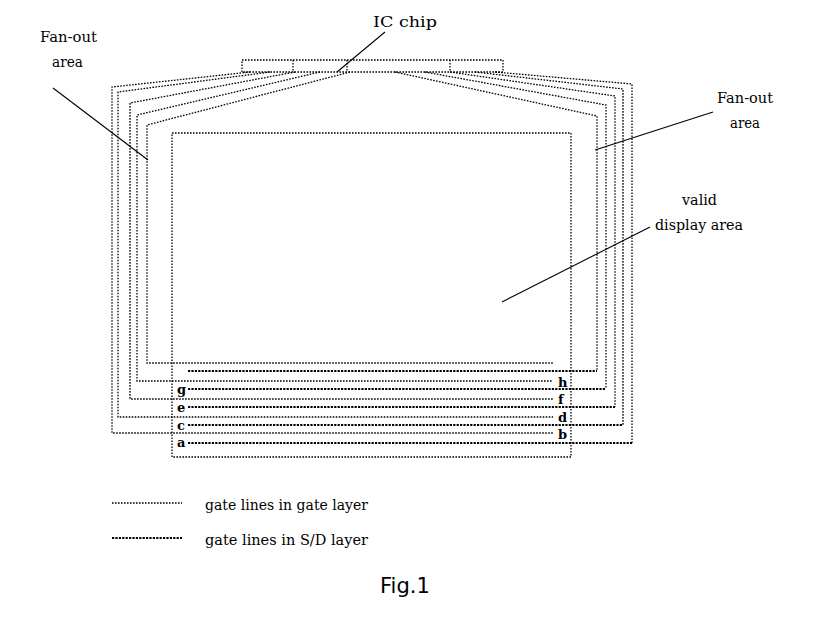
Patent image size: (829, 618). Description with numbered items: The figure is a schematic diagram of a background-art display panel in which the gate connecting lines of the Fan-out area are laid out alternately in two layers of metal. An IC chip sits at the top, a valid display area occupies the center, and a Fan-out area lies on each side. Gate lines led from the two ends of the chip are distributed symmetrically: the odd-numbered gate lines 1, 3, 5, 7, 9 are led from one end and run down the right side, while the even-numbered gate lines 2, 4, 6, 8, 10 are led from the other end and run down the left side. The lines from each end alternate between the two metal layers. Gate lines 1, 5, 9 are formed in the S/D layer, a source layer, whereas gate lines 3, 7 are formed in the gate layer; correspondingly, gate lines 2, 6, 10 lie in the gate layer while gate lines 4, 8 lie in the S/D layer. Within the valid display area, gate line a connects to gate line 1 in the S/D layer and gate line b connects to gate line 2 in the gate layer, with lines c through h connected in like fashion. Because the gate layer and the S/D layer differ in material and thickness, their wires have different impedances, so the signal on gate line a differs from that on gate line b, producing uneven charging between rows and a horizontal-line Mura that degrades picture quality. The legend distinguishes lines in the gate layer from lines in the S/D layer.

The gate line 1 is at (415, 257).
The gate line 2 is at (327, 252).
The gate line 3 is at (410, 248).
The gate line 4 is at (333, 244).
The gate line 5 is at (405, 239).
The gate line 6 is at (338, 235).
The gate line 7 is at (401, 230).
The gate line 8 is at (343, 226).
The gate line 9 is at (396, 221).
The gate line 10 is at (350, 217).